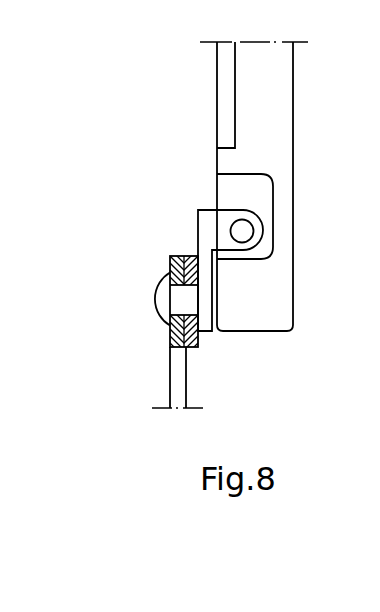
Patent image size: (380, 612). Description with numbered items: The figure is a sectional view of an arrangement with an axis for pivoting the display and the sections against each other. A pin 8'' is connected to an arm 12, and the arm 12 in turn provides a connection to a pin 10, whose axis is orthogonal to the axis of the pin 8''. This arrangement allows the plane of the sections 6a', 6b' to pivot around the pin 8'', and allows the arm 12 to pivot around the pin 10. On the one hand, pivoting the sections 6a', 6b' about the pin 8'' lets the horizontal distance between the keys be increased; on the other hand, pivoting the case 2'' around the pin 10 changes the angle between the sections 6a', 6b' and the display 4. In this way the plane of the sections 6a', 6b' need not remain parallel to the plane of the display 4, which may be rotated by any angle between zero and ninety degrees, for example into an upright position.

The case 2'' is at (298, 186).
The display 4 is at (198, 89).
The arm 12 is at (208, 223).
The pin 10 is at (245, 231).
The pin 8'' is at (140, 301).
The section 6b' is at (162, 243).
The section 6a' is at (147, 354).